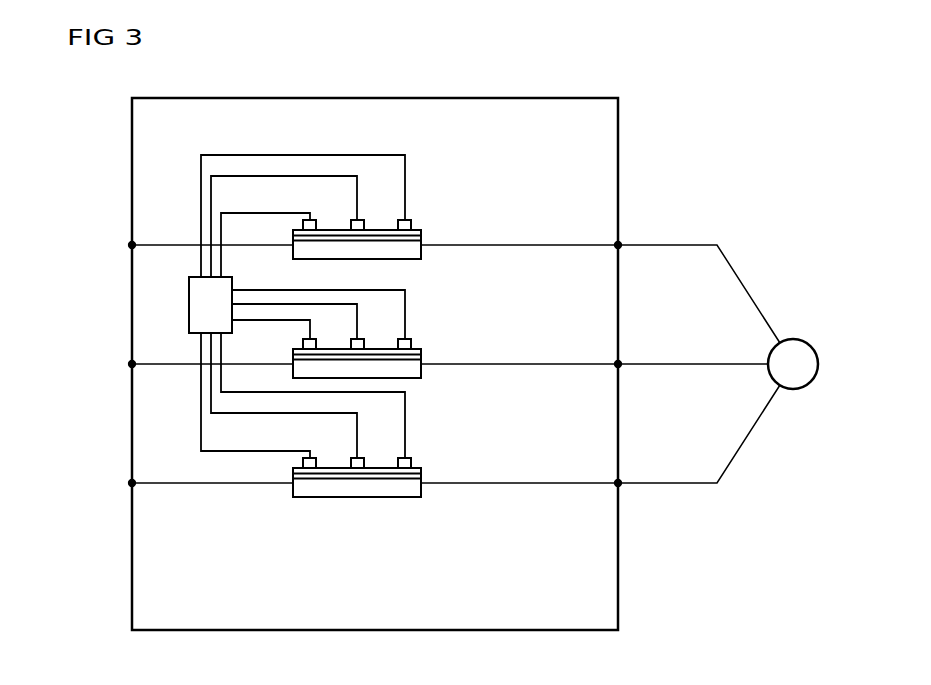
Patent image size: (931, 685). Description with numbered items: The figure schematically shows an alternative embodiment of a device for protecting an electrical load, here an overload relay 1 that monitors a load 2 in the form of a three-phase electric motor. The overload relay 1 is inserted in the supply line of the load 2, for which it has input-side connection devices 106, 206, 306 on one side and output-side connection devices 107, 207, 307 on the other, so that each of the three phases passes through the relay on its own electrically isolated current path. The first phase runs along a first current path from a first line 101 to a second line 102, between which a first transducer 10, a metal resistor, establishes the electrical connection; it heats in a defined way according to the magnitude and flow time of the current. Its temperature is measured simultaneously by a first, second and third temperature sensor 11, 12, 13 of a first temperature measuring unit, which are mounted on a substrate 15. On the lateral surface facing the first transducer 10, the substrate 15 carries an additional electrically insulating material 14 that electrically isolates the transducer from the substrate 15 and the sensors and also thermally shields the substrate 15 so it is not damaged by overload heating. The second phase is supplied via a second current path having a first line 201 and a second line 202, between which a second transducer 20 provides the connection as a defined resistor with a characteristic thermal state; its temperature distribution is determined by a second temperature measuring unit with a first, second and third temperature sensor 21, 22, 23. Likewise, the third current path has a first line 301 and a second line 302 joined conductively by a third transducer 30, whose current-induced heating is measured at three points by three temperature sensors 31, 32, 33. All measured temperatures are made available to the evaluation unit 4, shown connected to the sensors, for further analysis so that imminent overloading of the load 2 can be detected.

The overload relay 1 is at (562, 98).
The load 2 is at (797, 340).
The evaluation unit 4 is at (189, 283).
The first transducer 10 is at (421, 251).
The first temperature sensor 11 is at (308, 220).
The second temperature sensor 12 is at (360, 220).
The third temperature sensor 13 is at (410, 220).
The electrically insulating material 14 is at (421, 241).
The substrate 15 is at (421, 233).
The second transducer 20 is at (421, 370).
The first temperature sensor 21 is at (303, 341).
The second temperature sensor 22 is at (360, 340).
The third temperature sensor 23 is at (410, 340).
The third transducer 30 is at (375, 497).
The temperature sensor 31 is at (303, 461).
The temperature sensor 32 is at (358, 459).
The temperature sensor 33 is at (410, 459).
The first line 101 is at (150, 245).
The second line 102 is at (565, 245).
The input-side connection device 106 is at (132, 245).
The output-side connection device 107 is at (622, 245).
The first line 201 is at (150, 364).
The second line 202 is at (565, 364).
The input-side connection device 206 is at (132, 364).
The output-side connection device 207 is at (622, 364).
The first line 301 is at (150, 483).
The second line 302 is at (565, 483).
The input-side connection device 306 is at (132, 483).
The output-side connection device 307 is at (622, 483).